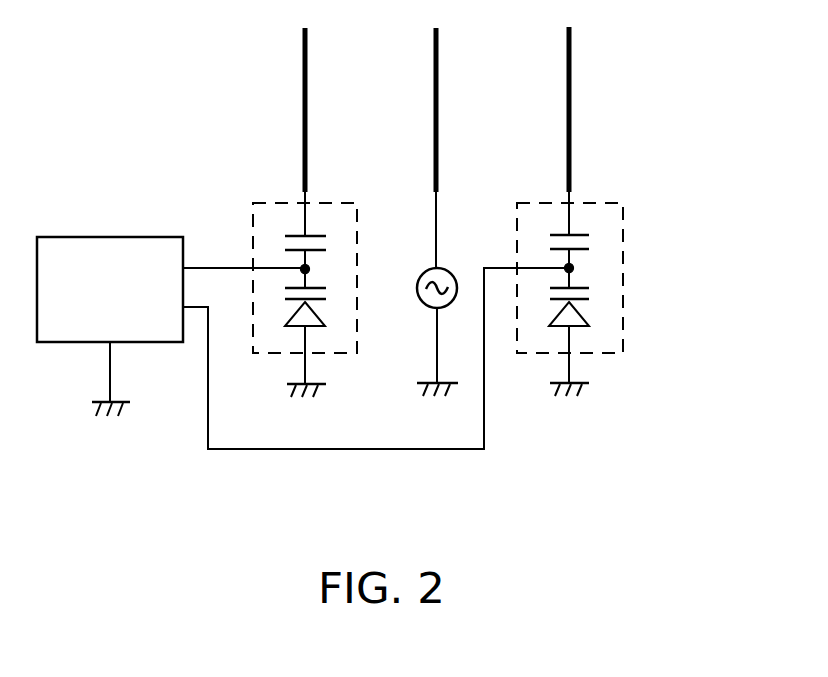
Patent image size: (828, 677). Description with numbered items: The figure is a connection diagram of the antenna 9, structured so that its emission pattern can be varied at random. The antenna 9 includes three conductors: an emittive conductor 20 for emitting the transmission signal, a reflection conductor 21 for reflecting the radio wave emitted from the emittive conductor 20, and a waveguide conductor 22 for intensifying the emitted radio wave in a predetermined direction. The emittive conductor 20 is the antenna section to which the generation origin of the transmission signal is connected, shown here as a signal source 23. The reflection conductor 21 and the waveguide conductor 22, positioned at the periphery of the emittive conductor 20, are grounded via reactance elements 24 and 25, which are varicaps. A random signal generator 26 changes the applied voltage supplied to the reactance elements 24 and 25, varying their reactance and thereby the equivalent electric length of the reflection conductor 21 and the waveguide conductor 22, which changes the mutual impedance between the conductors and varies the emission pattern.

The antenna 9 is at (747, 403).
The emittive conductor 20 is at (438, 57).
The reflection conductor 21 is at (306, 57).
The waveguide conductor 22 is at (571, 55).
The signal source 23 is at (450, 274).
The reactance element 24 is at (335, 200).
The reactance element 25 is at (596, 200).
The random signal generator 26 is at (128, 237).